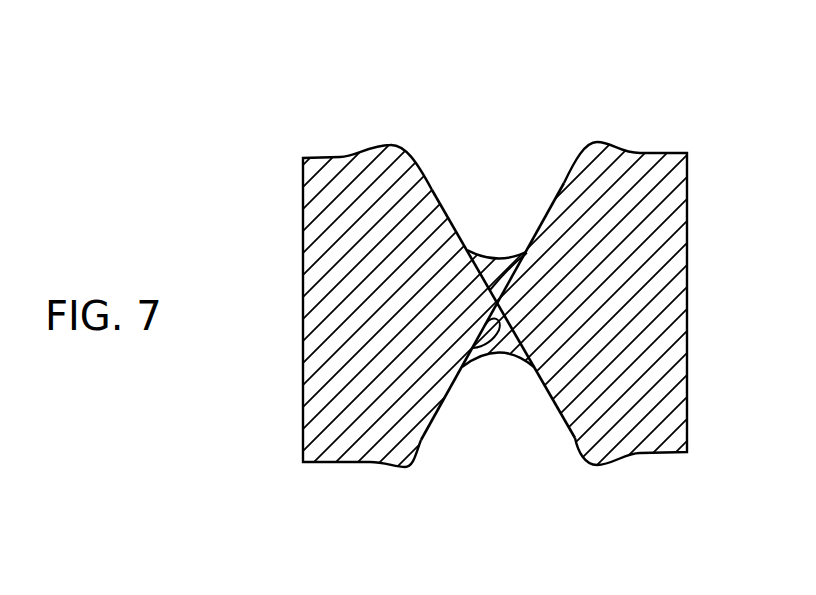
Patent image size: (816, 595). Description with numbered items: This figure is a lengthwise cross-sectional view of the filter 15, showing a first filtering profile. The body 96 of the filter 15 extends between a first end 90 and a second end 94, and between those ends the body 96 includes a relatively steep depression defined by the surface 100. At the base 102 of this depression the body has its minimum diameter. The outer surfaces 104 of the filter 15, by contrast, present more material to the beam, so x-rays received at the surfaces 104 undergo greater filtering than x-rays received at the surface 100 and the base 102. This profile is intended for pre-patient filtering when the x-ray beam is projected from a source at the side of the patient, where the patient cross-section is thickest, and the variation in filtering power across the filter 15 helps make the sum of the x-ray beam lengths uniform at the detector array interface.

The filter 15 is at (498, 138).
The end 90 is at (303, 238).
The end 94 is at (690, 213).
The body 96 is at (457, 148).
The surface 100 is at (555, 185).
The base 102 is at (507, 253).
The surfaces 104 is at (343, 157).